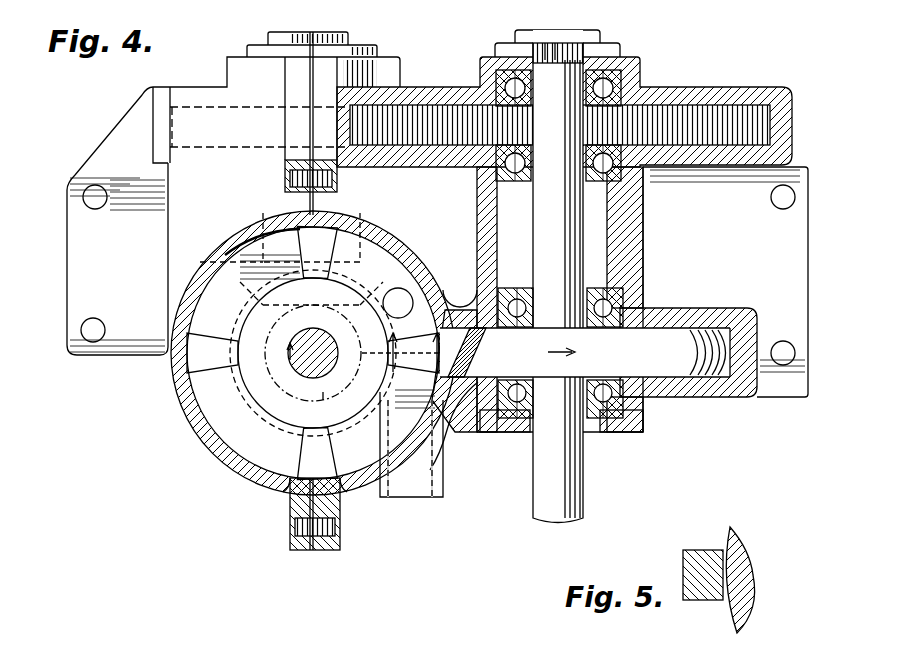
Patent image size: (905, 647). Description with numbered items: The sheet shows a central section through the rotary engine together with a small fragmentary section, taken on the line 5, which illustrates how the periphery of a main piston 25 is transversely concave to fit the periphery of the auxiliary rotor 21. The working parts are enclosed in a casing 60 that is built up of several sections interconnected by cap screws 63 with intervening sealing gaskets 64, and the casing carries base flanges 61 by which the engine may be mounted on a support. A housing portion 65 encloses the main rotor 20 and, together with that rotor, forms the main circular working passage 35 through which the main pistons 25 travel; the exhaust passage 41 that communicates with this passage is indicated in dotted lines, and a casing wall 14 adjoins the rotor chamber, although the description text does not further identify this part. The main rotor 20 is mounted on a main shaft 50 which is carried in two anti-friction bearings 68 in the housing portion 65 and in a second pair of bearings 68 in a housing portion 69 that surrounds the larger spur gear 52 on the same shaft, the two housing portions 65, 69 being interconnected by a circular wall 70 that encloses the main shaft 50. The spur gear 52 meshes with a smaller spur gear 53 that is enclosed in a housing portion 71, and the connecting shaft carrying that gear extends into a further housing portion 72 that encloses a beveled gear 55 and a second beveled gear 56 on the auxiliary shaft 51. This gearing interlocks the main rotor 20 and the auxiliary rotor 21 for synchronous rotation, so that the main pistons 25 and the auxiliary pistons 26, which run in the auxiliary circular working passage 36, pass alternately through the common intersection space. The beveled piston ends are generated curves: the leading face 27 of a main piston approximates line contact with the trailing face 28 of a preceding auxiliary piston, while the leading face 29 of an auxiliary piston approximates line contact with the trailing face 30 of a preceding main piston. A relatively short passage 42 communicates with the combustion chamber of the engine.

In FIG. 4, the housing portion 71 is at (176, 93).
In FIG. 4, the housing portion 72 is at (172, 228).
In FIG. 4, the base flanges 61 is at (90, 355).
In FIG. 4, the smaller spur gear 53 is at (168, 136).
In FIG. 4, the sealing gaskets 64 is at (285, 185).
In FIG. 4, the cap screws 63 is at (334, 182).
In FIG. 4, the casing 60 is at (432, 90).
In FIG. 4, the spur gear 52 is at (700, 103).
In FIG. 4, the housing portion 69 is at (755, 97).
In FIG. 4, the pump housing wall 14 is at (415, 262).
In FIG. 4, the circular wall 70 is at (645, 233).
In FIG. 4, the housing portion 65 is at (735, 308).
In FIG. 4, the main shaft 50 is at (585, 494).
In FIG. 4, the anti-friction bearings 68 is at (626, 80).
In FIG. 4, the auxiliary rotor 21 is at (228, 430).
In FIG. 5, the auxiliary rotor 21 is at (688, 600).
In FIG. 4, the auxiliary pistons 26 is at (372, 245).
In FIG. 4, the beveled gear 55 is at (418, 262).
In FIG. 4, the auxiliary circular working passage 36 is at (222, 270).
In FIG. 4, the leading face 29 is at (192, 360).
In FIG. 4, the second beveled gear 56 is at (250, 412).
In FIG. 4, the auxiliary shaft 51 is at (310, 362).
In FIG. 4, the trailing face 28 is at (288, 248).
In FIG. 4, the passage 42 is at (415, 303).
In FIG. 4, the section line 5- 5 is at (367, 366).
In FIG. 4, the main circular working passage 35 is at (480, 385).
In FIG. 4, the exhaust passage 41 is at (415, 498).
In FIG. 4, the trailing face 30 is at (612, 362).
In FIG. 4, the leading face 27 is at (490, 357).
In FIG. 4, the main rotor 20 is at (735, 340).
In FIG. 5, the main rotor 20 is at (752, 588).
In FIG. 4, the main pistons 25 is at (700, 390).
In FIG. 5, the main pistons 25 is at (728, 540).